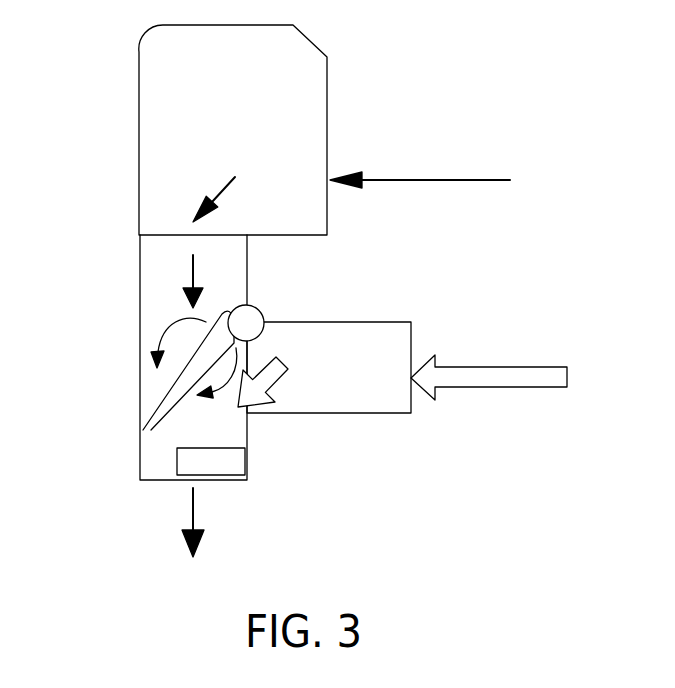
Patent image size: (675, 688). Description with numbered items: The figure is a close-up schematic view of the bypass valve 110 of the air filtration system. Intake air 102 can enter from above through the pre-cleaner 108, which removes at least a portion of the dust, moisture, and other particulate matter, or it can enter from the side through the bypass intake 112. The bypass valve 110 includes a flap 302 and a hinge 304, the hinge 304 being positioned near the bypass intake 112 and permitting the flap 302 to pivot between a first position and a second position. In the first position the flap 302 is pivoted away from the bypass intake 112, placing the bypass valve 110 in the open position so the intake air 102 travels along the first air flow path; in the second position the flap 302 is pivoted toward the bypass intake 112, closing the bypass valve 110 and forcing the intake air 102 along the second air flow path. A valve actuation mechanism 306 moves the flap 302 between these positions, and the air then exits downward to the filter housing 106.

The intake air 102 is at (435, 179).
The filter housing 106 is at (187, 508).
The pre-cleaner 108 is at (160, 77).
The bypass flow valve 110 is at (135, 325).
The bypass intake 112 is at (395, 415).
The flap 302 is at (156, 399).
The hinge 304 is at (262, 311).
The valve actuation mechanism 306 is at (248, 460).